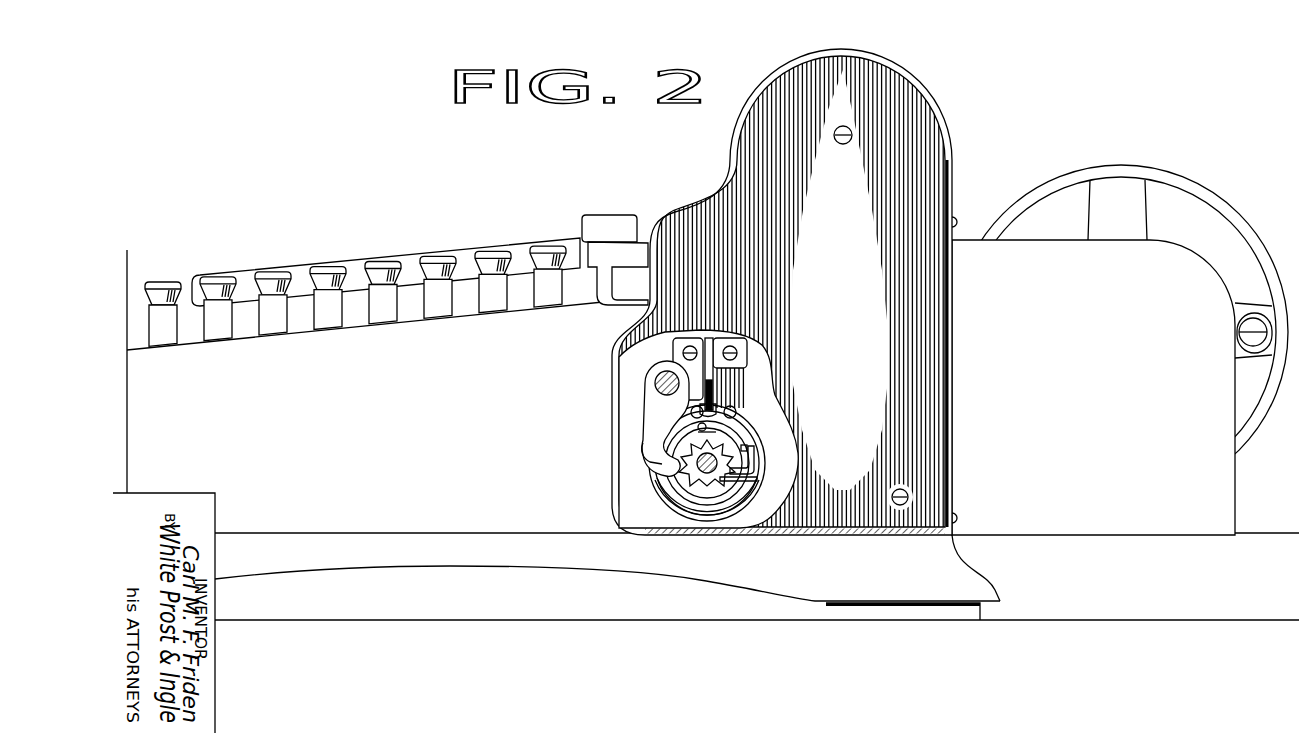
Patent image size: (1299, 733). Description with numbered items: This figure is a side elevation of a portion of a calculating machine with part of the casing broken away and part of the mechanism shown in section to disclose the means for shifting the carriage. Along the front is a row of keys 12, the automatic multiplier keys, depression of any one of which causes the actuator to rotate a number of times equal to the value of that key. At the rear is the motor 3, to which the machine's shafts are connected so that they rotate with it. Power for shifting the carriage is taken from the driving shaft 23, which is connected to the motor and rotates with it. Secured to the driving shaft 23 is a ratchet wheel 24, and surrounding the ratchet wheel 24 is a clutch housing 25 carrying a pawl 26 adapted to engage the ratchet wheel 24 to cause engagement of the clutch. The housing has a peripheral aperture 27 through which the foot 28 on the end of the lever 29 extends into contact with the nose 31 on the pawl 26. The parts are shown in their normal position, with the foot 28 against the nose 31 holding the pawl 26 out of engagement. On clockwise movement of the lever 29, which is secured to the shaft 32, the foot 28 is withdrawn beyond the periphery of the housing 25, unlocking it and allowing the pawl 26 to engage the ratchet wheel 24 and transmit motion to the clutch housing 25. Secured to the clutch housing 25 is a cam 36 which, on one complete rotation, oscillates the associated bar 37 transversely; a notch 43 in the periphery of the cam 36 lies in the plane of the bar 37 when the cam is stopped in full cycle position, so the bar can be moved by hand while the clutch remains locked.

The motor 3 is at (1212, 215).
The keys 12 is at (328, 270).
The driving shaft 23 is at (751, 467).
The ratchet wheel 24 is at (722, 479).
The clutch housing 25 is at (748, 450).
The pawl 26 is at (732, 435).
The peripheral aperture 27 is at (655, 477).
The foot 28 is at (653, 450).
The lever 29 is at (657, 400).
The nose 31 is at (667, 460).
The shaft 32 is at (657, 383).
The cam 36 is at (650, 500).
The bar 37 is at (710, 380).
The notch 43 is at (717, 402).